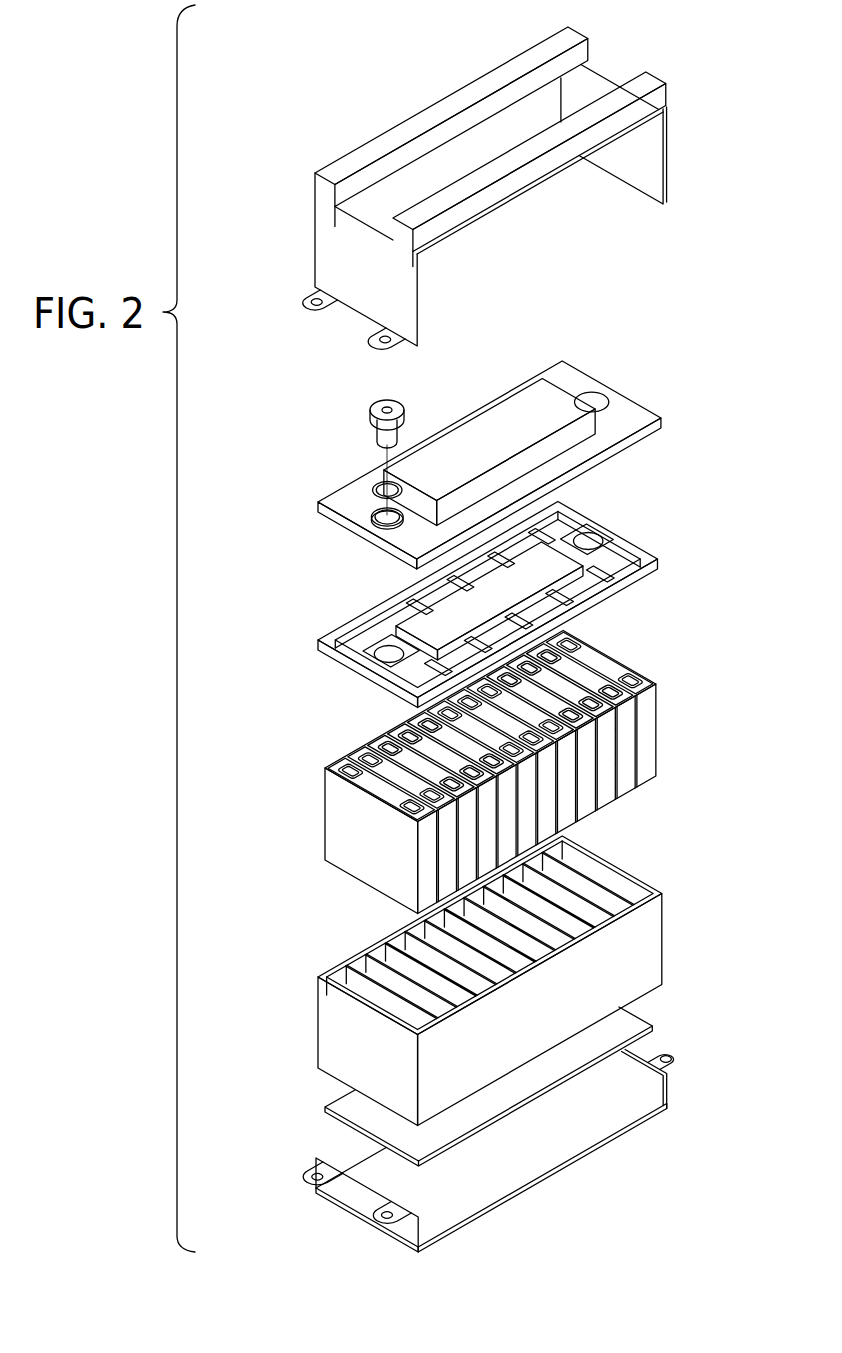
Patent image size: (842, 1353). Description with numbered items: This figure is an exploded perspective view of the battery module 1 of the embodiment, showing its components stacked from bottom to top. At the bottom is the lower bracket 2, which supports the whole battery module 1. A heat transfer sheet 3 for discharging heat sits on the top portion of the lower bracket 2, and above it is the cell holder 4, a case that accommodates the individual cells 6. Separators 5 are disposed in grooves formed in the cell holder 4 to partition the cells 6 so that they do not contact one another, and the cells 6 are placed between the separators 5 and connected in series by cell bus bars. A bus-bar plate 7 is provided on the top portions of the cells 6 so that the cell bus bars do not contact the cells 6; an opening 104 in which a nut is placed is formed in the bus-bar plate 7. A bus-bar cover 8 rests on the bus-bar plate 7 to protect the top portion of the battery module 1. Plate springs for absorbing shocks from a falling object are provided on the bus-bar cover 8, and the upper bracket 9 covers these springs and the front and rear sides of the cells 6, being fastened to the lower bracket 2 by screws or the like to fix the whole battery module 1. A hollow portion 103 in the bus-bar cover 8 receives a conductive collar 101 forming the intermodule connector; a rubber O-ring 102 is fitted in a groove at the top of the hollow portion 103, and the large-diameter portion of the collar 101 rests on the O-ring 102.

The battery module 1 is at (690, 77).
The lower bracket 2 is at (667, 1093).
The heat transfer sheet 3 is at (633, 1030).
The cell holder 4 is at (528, 976).
The separators 5 is at (620, 900).
The cells 6 is at (615, 668).
The bus-bar plate 7 is at (476, 596).
The bus-bar cover 8 is at (628, 418).
The upper bracket 9 is at (668, 165).
The collar 101 is at (406, 427).
The O-ring 102 is at (378, 488).
The hollow portion 103 is at (372, 516).
The opening 104 is at (387, 652).